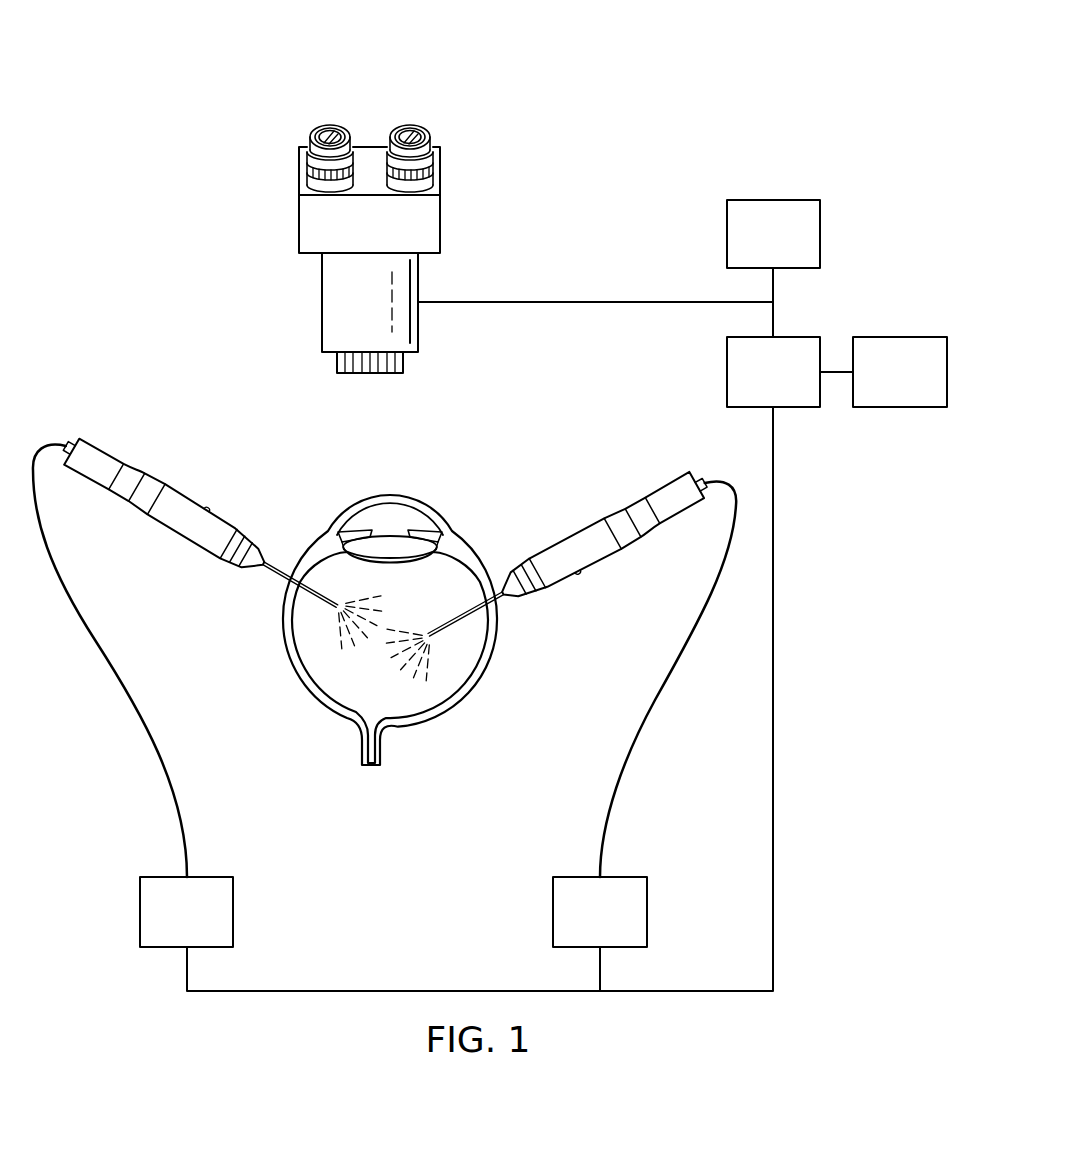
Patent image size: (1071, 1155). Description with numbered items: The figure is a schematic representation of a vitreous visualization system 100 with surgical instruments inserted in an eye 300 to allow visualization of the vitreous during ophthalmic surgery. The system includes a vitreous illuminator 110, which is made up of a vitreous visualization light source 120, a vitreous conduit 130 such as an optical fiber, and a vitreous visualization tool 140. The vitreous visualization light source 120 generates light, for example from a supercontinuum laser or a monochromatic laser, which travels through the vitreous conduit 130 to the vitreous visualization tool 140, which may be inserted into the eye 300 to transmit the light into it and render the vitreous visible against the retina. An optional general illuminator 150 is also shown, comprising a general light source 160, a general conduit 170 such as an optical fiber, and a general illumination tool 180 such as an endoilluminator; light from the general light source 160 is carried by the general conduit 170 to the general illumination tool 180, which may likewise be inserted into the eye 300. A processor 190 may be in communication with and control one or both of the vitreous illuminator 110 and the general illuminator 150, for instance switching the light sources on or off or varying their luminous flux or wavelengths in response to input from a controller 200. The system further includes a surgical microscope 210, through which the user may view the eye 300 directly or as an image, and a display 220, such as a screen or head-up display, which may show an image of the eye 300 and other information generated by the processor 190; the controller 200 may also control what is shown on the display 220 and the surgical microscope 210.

The vitreous visualization system 100 is at (622, 80).
The vitreous illuminator 110 is at (90, 408).
The vitreous visualization light source 120 is at (164, 926).
The vitreous conduit 130 is at (160, 770).
The vitreous visualization tool 140 is at (184, 489).
The general illuminator 150 is at (653, 455).
The general light source 160 is at (577, 926).
The general conduit 170 is at (620, 787).
The general illumination tool 180 is at (583, 526).
The processor 190 is at (750, 387).
The controller 200 is at (877, 387).
The surgical microscope 210 is at (322, 312).
The display 220 is at (750, 248).
The eye 300 is at (278, 618).